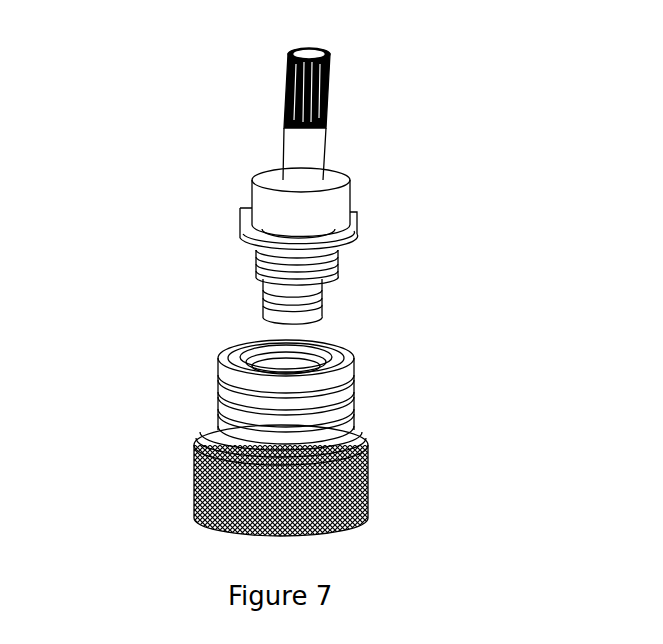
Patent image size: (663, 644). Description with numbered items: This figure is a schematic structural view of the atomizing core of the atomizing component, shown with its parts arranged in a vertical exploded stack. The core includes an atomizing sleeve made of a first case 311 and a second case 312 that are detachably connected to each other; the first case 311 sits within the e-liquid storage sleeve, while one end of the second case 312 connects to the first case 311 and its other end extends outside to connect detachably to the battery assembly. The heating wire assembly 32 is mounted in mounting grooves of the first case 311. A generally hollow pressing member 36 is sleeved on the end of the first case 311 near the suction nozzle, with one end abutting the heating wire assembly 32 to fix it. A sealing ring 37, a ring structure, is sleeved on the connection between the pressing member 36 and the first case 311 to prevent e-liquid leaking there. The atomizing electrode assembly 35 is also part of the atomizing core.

The pressing member 36 is at (300, 143).
The sealing ring 37 is at (265, 200).
The heating wire assembly 32 is at (355, 229).
The first case 311 is at (250, 248).
The atomizing electrode assembly 35 is at (320, 302).
The second case 312 is at (232, 410).